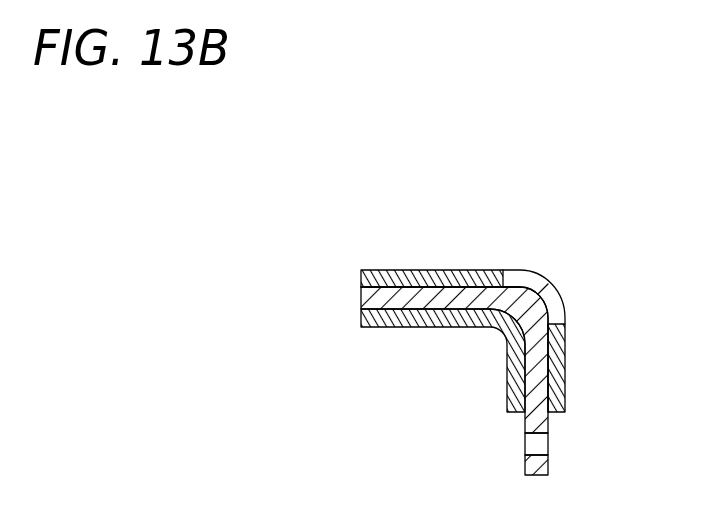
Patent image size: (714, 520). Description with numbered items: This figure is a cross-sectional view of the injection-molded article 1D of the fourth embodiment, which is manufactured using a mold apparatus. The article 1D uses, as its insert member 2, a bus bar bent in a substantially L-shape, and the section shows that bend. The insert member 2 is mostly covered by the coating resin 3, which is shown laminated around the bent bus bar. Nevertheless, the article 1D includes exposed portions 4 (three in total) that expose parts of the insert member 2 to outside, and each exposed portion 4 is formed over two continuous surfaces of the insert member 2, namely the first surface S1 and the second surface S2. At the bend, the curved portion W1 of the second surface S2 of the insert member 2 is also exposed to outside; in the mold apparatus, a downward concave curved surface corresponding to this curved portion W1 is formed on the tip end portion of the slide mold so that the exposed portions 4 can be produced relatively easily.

The injection-molded article 1D is at (493, 324).
The insert member 2 is at (395, 300).
The coating resin 3 is at (381, 320).
The exposed portion 4 is at (548, 284).
The first surface S1 is at (446, 276).
The second surface S2 is at (572, 395).
The curved portion W1 is at (516, 270).